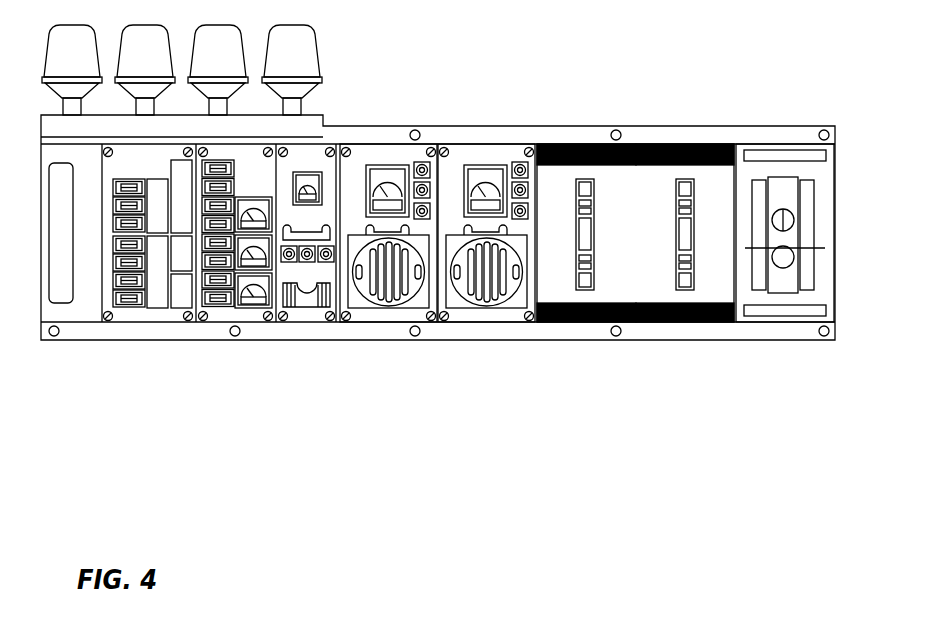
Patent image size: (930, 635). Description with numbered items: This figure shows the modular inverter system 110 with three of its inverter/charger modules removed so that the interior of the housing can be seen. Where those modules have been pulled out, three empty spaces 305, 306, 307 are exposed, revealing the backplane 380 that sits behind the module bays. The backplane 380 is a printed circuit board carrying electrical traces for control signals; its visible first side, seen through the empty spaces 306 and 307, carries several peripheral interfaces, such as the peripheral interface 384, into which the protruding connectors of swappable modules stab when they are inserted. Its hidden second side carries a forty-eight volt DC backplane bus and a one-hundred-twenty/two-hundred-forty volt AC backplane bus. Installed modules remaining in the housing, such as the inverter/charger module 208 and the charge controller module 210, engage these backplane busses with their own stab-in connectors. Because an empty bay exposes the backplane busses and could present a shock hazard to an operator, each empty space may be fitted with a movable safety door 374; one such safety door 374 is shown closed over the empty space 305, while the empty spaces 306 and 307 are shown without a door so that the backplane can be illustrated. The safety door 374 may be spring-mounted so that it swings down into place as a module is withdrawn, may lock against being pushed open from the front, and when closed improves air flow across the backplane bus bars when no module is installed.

The modular inverter system 110 is at (308, 445).
The charge controller module 210 is at (396, 322).
The inverter/charger module 208 is at (485, 322).
The backplane 380 is at (635, 225).
The peripheral interface 384 is at (588, 160).
The empty space 307 is at (588, 322).
The empty space 306 is at (692, 322).
The empty space 305 is at (785, 224).
The safety door 374 is at (786, 160).